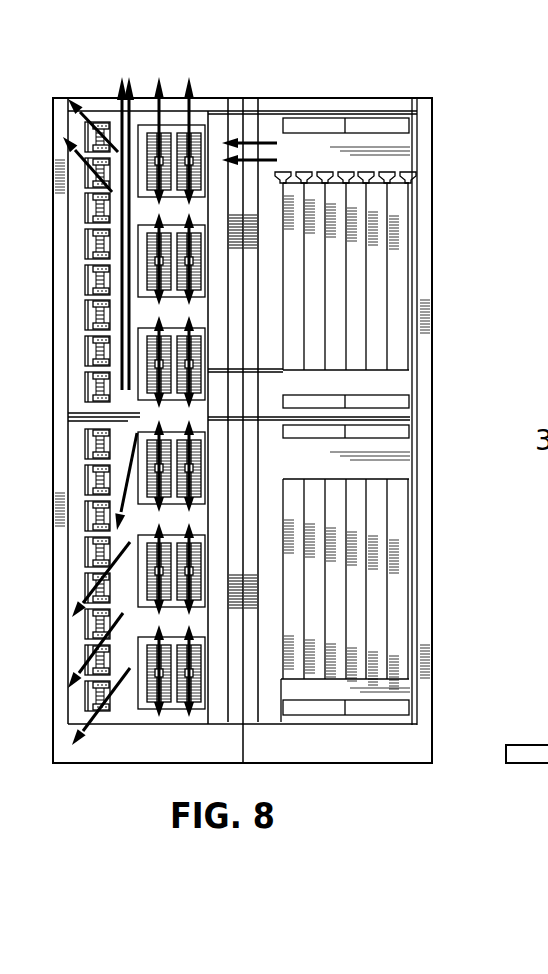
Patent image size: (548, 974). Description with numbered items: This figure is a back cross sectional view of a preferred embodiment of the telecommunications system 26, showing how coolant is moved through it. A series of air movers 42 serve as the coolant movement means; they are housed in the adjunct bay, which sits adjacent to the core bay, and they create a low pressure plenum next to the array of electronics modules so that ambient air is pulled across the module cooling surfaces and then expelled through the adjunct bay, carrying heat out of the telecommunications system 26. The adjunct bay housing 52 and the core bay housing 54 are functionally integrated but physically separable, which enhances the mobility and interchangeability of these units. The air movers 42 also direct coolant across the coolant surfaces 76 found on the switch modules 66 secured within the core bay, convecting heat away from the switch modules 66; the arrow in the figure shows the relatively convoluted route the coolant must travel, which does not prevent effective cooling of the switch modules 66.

The telecommunications system 26 is at (452, 630).
The air movers 42 is at (173, 143).
The adjunct bay housing 52 is at (93, 97).
The core bay housing 54 is at (380, 96).
The switch modules 66 is at (377, 275).
The coolant surfaces 76 is at (433, 132).